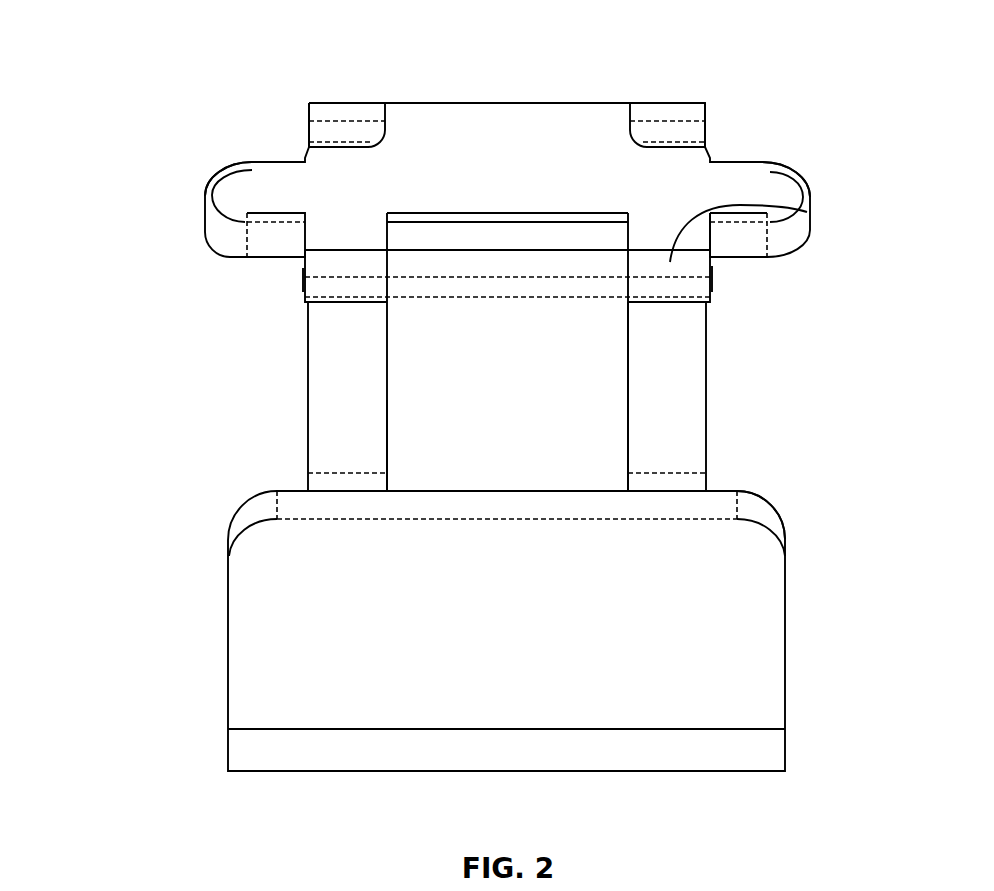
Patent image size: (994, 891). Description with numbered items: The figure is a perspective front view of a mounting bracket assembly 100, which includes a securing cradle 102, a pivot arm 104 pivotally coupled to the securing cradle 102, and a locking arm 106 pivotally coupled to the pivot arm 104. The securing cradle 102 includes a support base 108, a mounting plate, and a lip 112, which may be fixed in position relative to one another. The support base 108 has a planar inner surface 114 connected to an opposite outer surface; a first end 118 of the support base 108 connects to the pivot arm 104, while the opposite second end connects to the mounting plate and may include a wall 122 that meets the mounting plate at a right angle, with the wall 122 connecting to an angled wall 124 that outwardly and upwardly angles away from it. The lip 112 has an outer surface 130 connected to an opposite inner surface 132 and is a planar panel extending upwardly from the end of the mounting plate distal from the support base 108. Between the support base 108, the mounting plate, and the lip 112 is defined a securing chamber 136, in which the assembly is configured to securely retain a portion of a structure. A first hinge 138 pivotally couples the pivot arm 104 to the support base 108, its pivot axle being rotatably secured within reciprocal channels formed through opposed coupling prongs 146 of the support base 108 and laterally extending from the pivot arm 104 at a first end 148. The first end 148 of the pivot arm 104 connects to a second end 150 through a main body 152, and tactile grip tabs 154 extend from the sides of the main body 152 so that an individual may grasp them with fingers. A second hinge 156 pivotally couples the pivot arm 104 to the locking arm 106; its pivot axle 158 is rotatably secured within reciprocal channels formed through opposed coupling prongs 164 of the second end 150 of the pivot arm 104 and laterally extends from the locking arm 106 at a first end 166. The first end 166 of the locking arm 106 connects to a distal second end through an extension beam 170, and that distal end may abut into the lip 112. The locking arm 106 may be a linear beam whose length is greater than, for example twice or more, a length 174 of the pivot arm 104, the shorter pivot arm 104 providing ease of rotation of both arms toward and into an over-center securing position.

The mounting bracket assembly 100 is at (216, 60).
The securing cradle 102 is at (716, 380).
The pivot arm 104 is at (528, 152).
The locking arm 106 is at (600, 460).
The support base 108 is at (308, 410).
The lip 112 is at (748, 618).
The inner surface 114 is at (340, 345).
The first end 118 is at (672, 112).
The wall 122 is at (313, 482).
The angled wall 124 is at (308, 380).
The outer surface 130 is at (727, 490).
The inner surface 132 is at (352, 682).
The securing chamber 136 is at (333, 445).
The first hinge 138 is at (718, 98).
The coupling prongs 146 is at (317, 113).
The first end 148 is at (403, 115).
The second end 150 is at (707, 232).
The main body 152 is at (672, 180).
The tactile grip tabs 154 is at (208, 185).
The second hinge 156 is at (730, 299).
The pivot axle 158 is at (720, 277).
The coupling prongs 164 is at (332, 273).
The first end 166 is at (458, 272).
The extension beam 170 is at (507, 398).
The length 174 is at (122, 103).